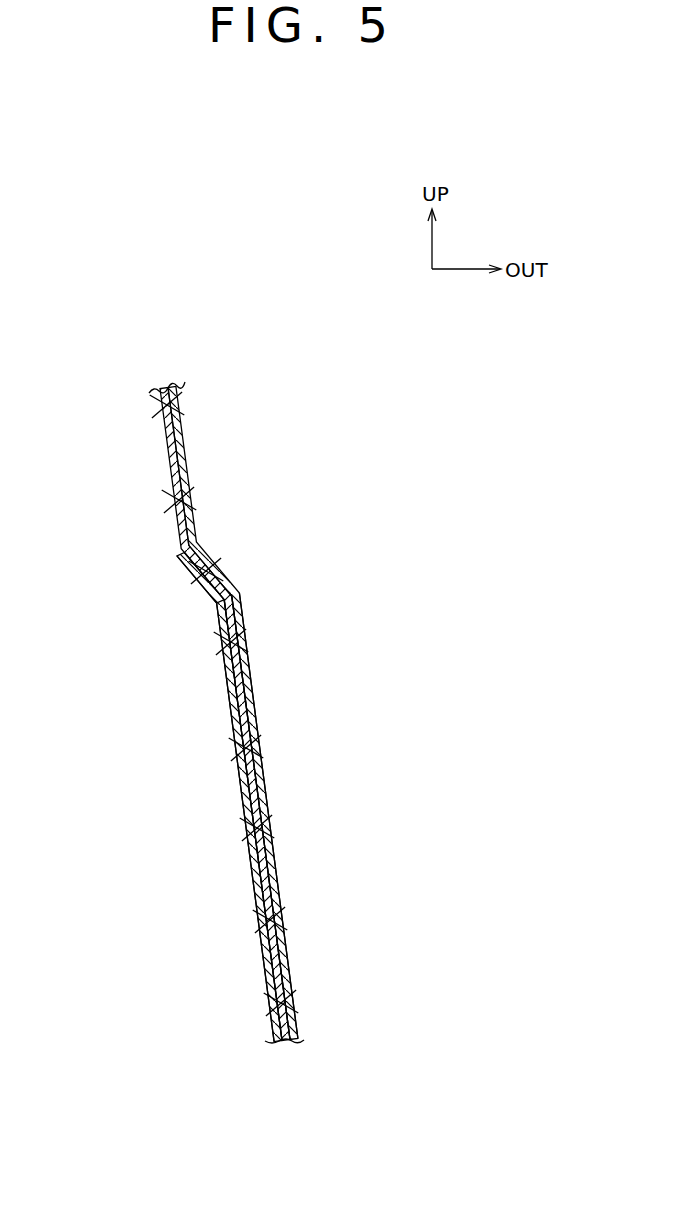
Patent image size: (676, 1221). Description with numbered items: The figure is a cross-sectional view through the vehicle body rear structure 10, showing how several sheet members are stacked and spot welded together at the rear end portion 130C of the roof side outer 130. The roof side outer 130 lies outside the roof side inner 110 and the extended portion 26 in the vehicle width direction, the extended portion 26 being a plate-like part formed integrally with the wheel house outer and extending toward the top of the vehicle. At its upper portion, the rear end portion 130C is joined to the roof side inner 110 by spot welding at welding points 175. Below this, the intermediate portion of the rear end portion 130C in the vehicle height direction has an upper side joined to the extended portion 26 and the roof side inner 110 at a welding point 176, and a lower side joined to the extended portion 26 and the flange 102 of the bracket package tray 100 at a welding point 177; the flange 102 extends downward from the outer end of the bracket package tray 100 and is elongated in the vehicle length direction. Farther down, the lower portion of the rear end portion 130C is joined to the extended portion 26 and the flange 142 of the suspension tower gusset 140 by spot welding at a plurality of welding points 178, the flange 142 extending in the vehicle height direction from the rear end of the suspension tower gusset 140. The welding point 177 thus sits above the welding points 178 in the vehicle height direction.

The vehicle body rear structure 10 is at (169, 301).
The extended portion 26 is at (212, 597).
The bracket package tray 100 is at (229, 797).
The flange 102 is at (222, 664).
The roof side inner 110 is at (160, 474).
The roof side outer 130 is at (193, 433).
The rear end portion 130C is at (254, 708).
The suspension tower gusset 140 is at (249, 821).
The flange 142 is at (253, 878).
The welding points 175 is at (188, 408).
The welding point 176 is at (222, 572).
The welding point 177 is at (245, 642).
The welding points 178 is at (277, 830).